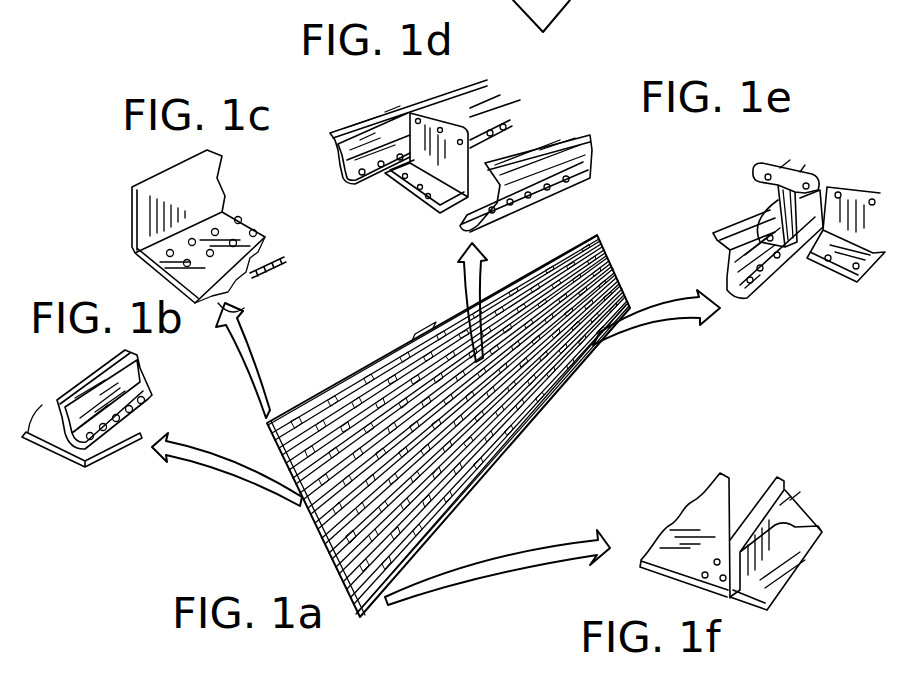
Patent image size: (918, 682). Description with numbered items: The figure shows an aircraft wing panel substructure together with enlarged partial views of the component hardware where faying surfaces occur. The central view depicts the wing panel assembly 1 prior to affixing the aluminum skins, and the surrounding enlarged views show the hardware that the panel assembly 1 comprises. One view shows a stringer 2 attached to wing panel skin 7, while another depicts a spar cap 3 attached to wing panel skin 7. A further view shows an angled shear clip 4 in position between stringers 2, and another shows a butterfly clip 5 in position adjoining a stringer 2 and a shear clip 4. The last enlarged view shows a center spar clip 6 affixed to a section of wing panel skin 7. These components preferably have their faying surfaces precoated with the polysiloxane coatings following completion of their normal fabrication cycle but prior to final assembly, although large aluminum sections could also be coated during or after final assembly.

In FIG. 1a, the wing panel assembly 1 is at (627, 436).
In FIG. 1b, the stringer 2 is at (90, 393).
In FIG. 1d, the stringer 2 is at (362, 125).
In FIG. 1e, the stringer 2 is at (740, 222).
In FIG. 1c, the spar cap 3 is at (152, 210).
In FIG. 1d, the angled shear clip 4 is at (410, 197).
In FIG. 1e, the angled shear clip 4 is at (853, 188).
In FIG. 1e, the butterfly clip 5 is at (790, 177).
In FIG. 1f, the center spar clip 6 is at (773, 507).
In FIG. 1b, the wing panel skin 7 is at (112, 455).
In FIG. 1c, the wing panel skin 7 is at (268, 255).
In FIG. 1f, the wing panel skin 7 is at (727, 472).